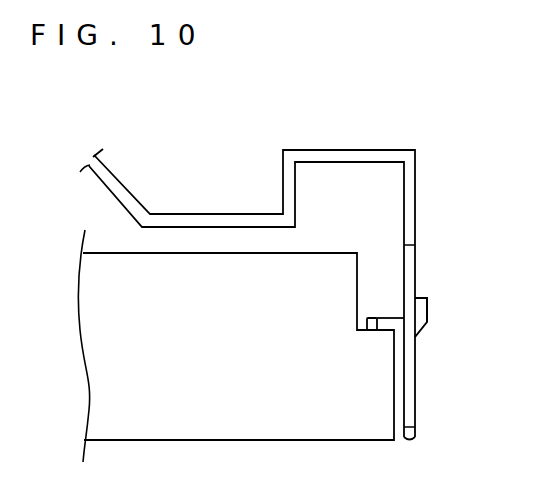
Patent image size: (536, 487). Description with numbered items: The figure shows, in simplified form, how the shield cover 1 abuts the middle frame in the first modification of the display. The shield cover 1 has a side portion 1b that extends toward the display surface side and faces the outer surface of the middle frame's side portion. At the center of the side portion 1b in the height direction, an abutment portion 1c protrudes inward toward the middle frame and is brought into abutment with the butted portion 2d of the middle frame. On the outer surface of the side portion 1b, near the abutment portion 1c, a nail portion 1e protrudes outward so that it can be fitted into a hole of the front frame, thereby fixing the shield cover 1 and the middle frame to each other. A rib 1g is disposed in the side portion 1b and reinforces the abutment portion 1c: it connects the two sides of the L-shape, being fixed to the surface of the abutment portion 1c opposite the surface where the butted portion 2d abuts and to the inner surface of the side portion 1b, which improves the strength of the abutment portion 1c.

The shield cover 1 is at (343, 150).
The side portion 1b is at (413, 202).
The abutment portion 1c is at (393, 331).
The nail portion 1e is at (428, 312).
The rib 1g is at (386, 318).
The butted portion 2d is at (363, 327).